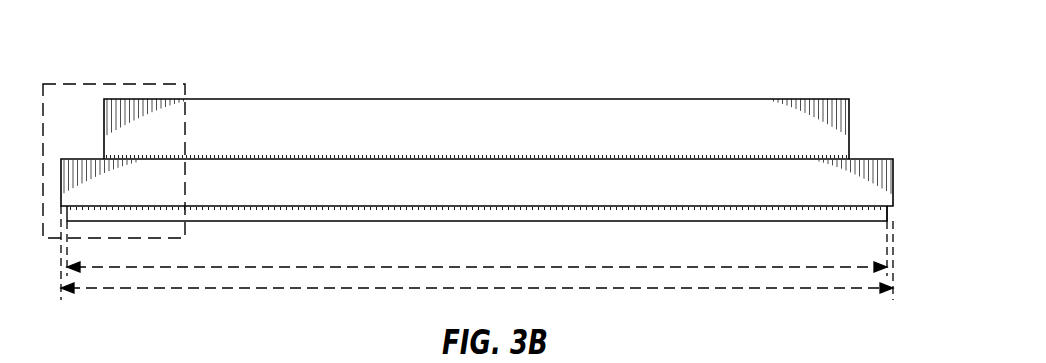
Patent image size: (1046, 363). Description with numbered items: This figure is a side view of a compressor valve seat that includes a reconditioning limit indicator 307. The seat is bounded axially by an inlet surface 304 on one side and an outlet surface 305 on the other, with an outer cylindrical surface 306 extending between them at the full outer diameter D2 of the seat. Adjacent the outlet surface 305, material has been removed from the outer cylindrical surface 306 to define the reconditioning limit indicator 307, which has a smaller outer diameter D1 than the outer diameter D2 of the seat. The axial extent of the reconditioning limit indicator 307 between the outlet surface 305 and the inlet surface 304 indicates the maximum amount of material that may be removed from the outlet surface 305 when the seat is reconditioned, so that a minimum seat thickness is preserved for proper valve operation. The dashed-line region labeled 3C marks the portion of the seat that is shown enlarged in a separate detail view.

The inlet surface 304 is at (600, 99).
The outlet surface 305 is at (705, 222).
The outer cylindrical surface 306 is at (893, 172).
The reconditioning limit indicator 307 is at (887, 214).
The enlarged view portion 3C is at (152, 85).
The outer diameter of the reconditioning limit indicator D1 is at (290, 266).
The outer diameter of the seat D2 is at (310, 290).